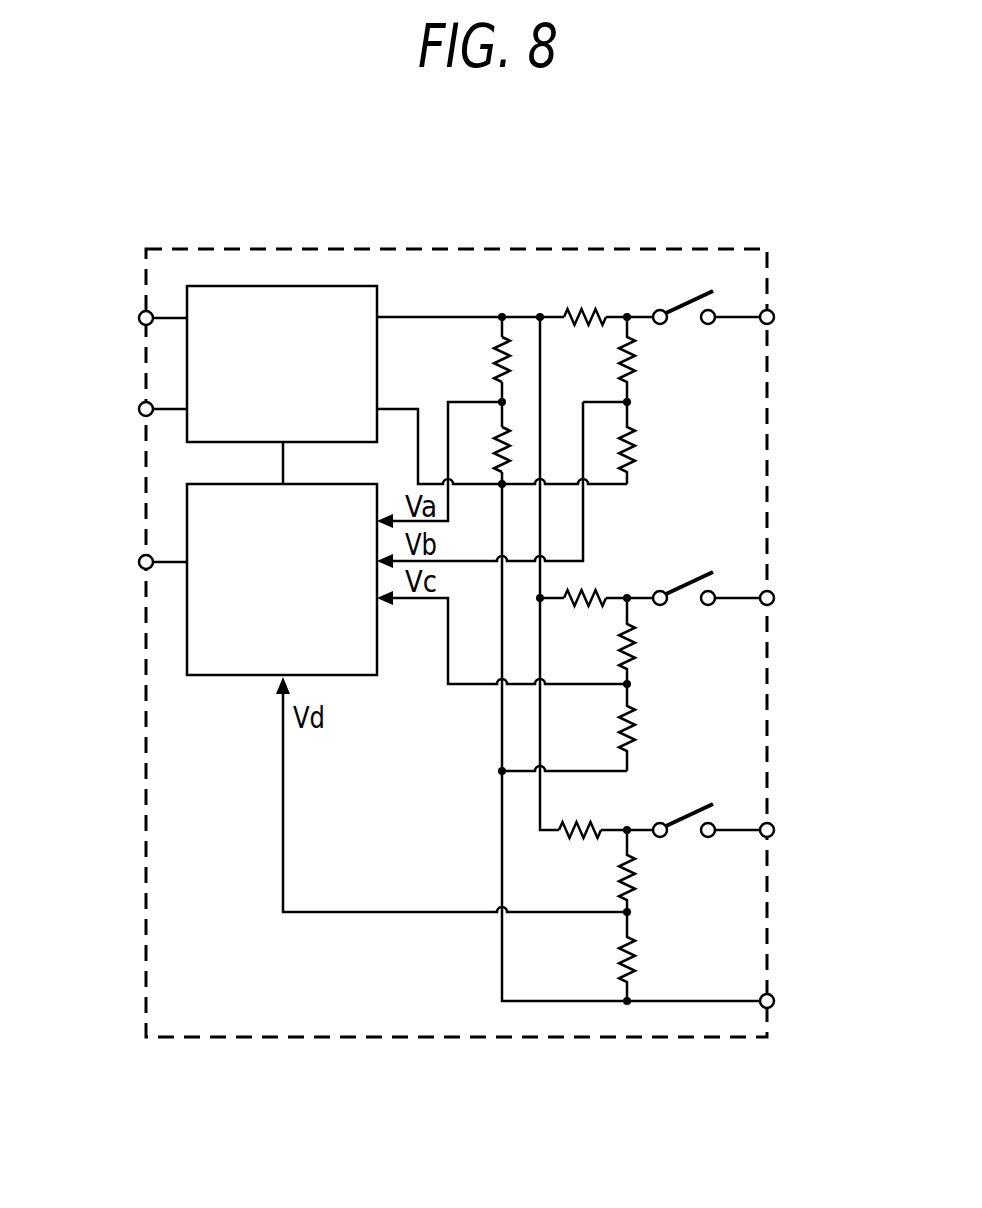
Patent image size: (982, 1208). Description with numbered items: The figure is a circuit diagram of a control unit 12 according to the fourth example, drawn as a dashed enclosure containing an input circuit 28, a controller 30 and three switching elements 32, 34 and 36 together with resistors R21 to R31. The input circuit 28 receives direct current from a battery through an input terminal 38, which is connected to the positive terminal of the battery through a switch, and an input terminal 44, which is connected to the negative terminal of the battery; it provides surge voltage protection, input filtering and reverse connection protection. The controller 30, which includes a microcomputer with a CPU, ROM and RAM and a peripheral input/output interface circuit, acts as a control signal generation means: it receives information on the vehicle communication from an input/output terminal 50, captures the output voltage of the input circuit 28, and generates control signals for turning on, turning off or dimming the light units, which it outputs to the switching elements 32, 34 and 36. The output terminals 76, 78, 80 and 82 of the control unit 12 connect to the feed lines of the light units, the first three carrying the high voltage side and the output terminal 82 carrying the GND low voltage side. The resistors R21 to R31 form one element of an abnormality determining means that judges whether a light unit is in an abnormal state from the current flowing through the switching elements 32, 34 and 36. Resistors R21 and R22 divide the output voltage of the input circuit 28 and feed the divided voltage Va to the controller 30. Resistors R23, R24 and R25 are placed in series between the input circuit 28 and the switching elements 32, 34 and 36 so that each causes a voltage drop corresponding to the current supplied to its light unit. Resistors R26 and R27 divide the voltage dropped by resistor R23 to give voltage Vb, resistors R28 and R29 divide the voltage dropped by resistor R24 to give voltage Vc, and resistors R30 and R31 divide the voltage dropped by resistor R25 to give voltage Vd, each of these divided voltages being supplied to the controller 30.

The control unit 12 is at (476, 249).
The input circuit 28 is at (280, 286).
The controller 30 is at (240, 677).
The switching element 32 is at (690, 292).
The switching element 34 is at (688, 578).
The switching element 36 is at (688, 812).
The input terminal 38 is at (139, 318).
The input terminal 44 is at (139, 409).
The input/output terminal 50 is at (139, 562).
The output terminal 76 is at (775, 318).
The output terminal 78 is at (775, 599).
The output terminal 80 is at (775, 831).
The output terminal 82 is at (775, 1002).
The resistor R21 is at (491, 362).
The resistor R22 is at (491, 445).
The resistor R23 is at (588, 294).
The resistor R24 is at (602, 579).
The resistor R25 is at (577, 810).
The resistor R26 is at (658, 359).
The resistor R27 is at (658, 443).
The resistor R28 is at (658, 641).
The resistor R29 is at (658, 727).
The resistor R30 is at (659, 871).
The resistor R31 is at (659, 956).